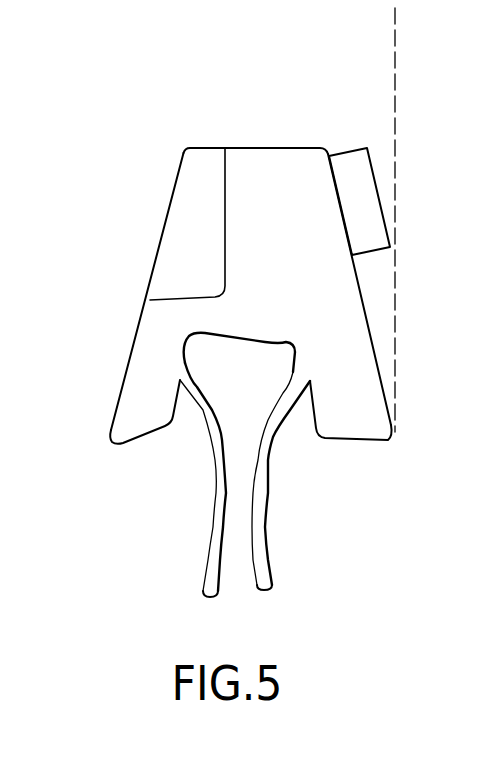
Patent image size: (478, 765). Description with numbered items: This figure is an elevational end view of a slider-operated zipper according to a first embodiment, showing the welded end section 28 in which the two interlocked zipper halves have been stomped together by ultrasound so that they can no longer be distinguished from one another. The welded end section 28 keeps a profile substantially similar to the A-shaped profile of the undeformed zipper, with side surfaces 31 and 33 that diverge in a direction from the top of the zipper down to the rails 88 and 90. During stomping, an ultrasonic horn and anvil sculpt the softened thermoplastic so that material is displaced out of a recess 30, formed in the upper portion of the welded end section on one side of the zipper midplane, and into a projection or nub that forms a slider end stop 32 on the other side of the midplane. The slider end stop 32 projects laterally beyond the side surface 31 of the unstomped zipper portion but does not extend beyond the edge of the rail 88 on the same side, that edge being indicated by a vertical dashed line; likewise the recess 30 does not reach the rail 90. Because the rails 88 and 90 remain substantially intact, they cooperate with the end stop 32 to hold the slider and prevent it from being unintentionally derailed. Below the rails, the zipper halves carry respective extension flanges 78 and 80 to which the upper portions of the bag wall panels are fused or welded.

The welded end section 28 is at (261, 372).
The recess 30 is at (183, 228).
The side surface 31 is at (370, 330).
The slider end stop 32 is at (378, 193).
The side surface 33 is at (125, 370).
The extension flange 78 is at (262, 530).
The extension flange 80 is at (215, 532).
The rail 88 is at (375, 428).
The rail 90 is at (135, 425).